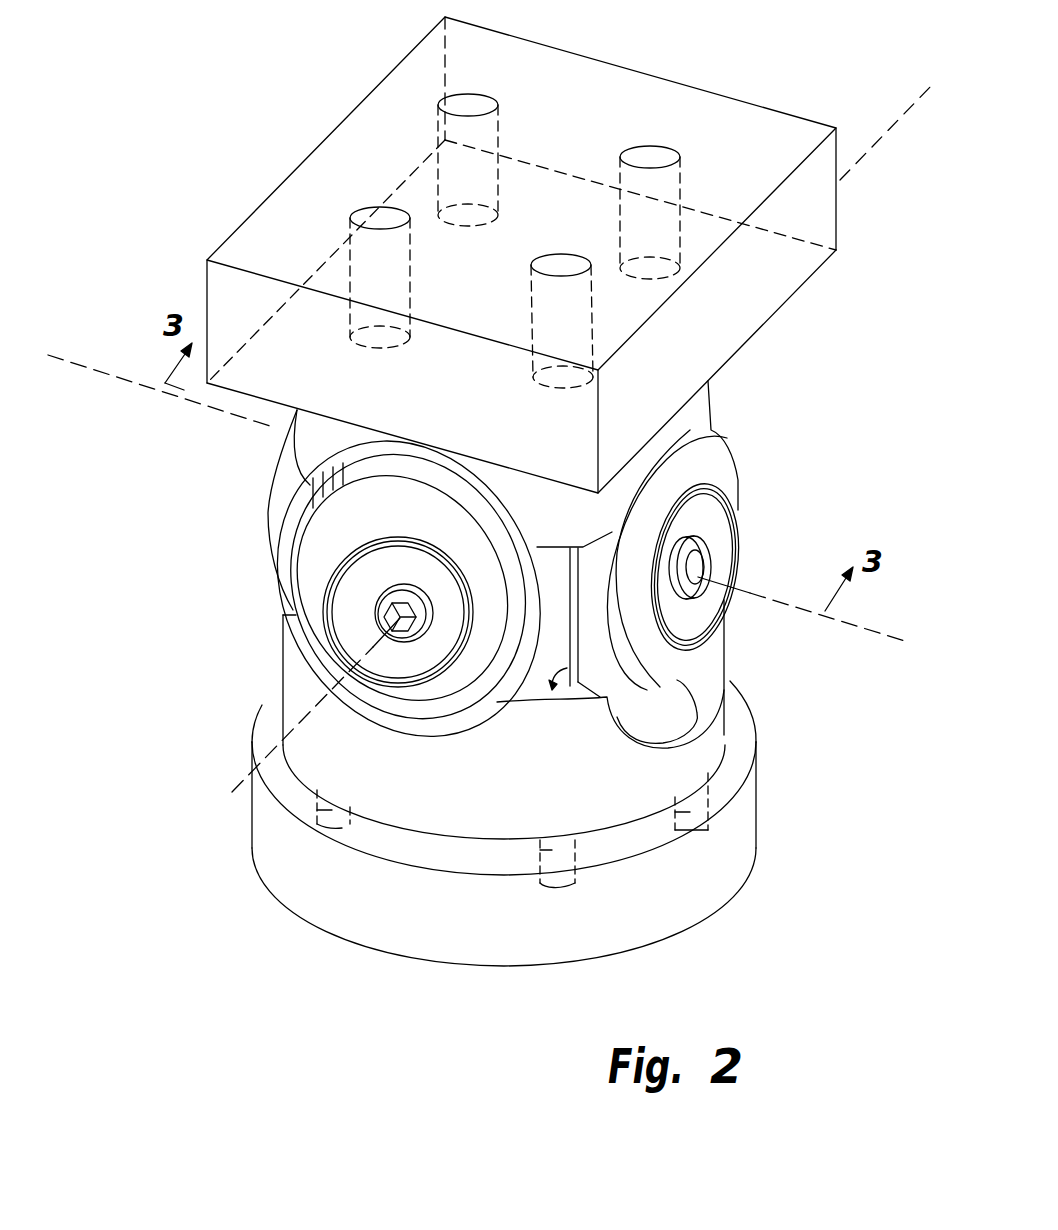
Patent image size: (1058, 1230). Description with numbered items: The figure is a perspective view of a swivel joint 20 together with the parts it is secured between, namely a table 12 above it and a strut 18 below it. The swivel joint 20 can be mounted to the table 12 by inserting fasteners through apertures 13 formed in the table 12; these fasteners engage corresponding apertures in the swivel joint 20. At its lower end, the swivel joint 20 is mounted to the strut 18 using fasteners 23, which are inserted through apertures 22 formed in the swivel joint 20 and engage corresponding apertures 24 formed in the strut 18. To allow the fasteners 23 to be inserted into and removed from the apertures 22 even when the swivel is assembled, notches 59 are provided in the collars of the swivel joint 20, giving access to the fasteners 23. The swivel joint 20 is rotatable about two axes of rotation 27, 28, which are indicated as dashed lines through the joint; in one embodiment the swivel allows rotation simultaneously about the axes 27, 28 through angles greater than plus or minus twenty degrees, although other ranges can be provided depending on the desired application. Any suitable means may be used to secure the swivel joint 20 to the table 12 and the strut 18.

The table 12 is at (356, 106).
The apertures 13 is at (497, 100).
The strut 18 is at (445, 970).
The swivel joint 20 is at (733, 652).
The apertures 22 is at (578, 693).
The fasteners 23 is at (330, 812).
The apertures 24 is at (342, 828).
The axis of rotation 27 is at (110, 372).
The axis of rotation 28 is at (233, 792).
The notches 59 is at (578, 703).